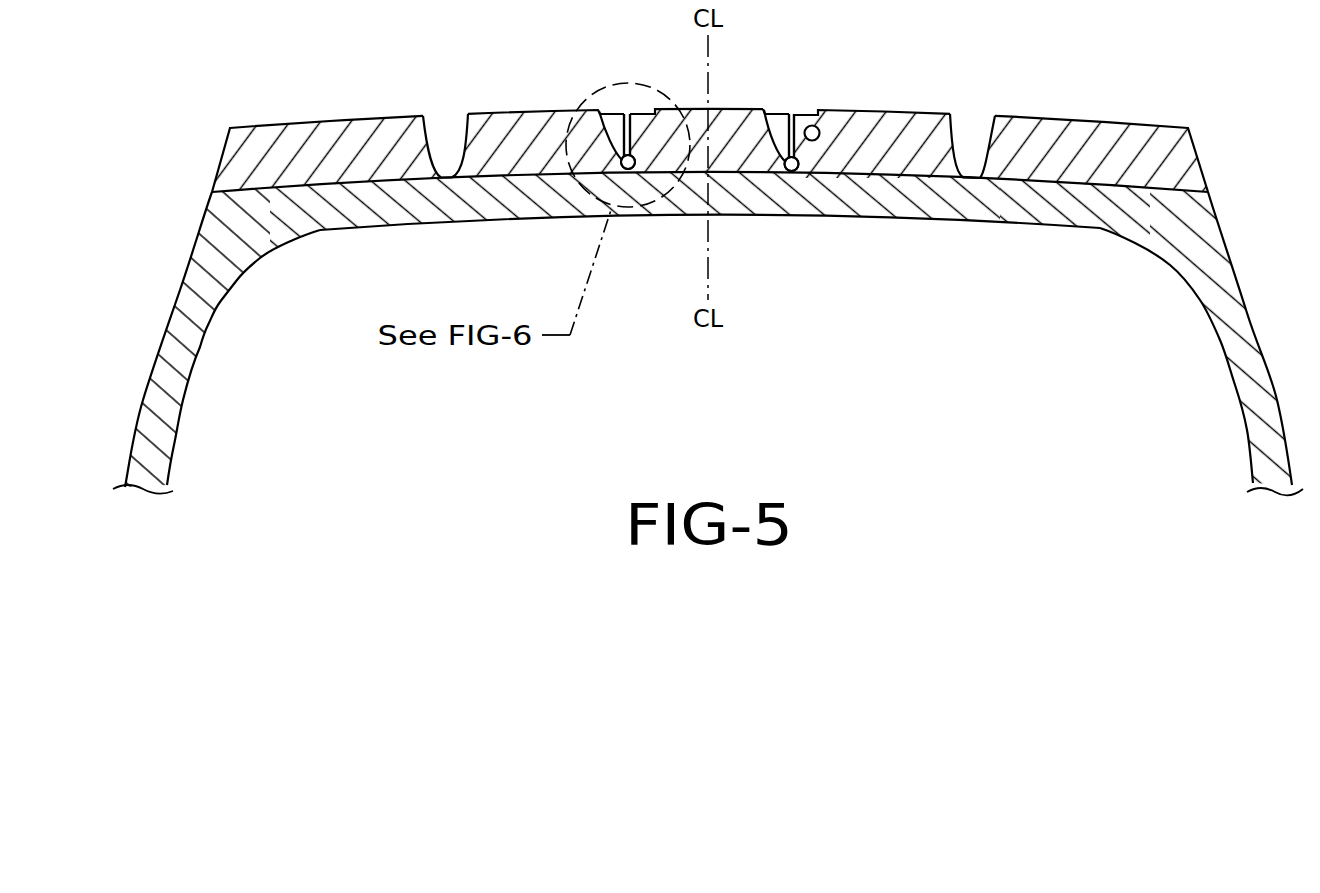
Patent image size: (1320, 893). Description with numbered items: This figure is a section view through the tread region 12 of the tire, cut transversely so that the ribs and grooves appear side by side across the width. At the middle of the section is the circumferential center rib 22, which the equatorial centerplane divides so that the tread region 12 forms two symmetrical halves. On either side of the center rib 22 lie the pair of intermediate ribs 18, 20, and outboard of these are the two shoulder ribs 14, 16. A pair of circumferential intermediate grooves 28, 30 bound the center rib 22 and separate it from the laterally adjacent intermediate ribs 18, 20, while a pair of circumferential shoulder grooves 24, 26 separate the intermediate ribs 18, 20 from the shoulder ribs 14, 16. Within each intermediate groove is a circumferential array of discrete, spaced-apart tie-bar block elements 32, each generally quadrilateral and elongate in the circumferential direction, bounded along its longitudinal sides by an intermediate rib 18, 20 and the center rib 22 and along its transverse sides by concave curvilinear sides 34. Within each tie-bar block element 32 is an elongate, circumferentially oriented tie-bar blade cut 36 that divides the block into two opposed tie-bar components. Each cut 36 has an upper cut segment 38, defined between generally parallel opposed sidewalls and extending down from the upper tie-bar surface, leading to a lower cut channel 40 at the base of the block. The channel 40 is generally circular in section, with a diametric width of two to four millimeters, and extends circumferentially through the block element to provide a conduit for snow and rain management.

The tread region 12 is at (266, 116).
The shoulder rib 14 is at (333, 135).
The shoulder rib 16 is at (1088, 137).
The intermediate rib 18 is at (530, 127).
The intermediate rib 20 is at (888, 125).
The center rib 22 is at (695, 118).
The shoulder groove 24 is at (453, 147).
The shoulder groove 26 is at (965, 148).
The intermediate groove 28 is at (617, 113).
The intermediate groove 30 is at (802, 112).
The tie-bar block element 32 is at (775, 137).
The concave curvilinear side 34 is at (818, 138).
The tie-bar blade cut 36 is at (633, 153).
The upper cut segment 38 is at (623, 122).
The lower cut channel 40 is at (628, 171).